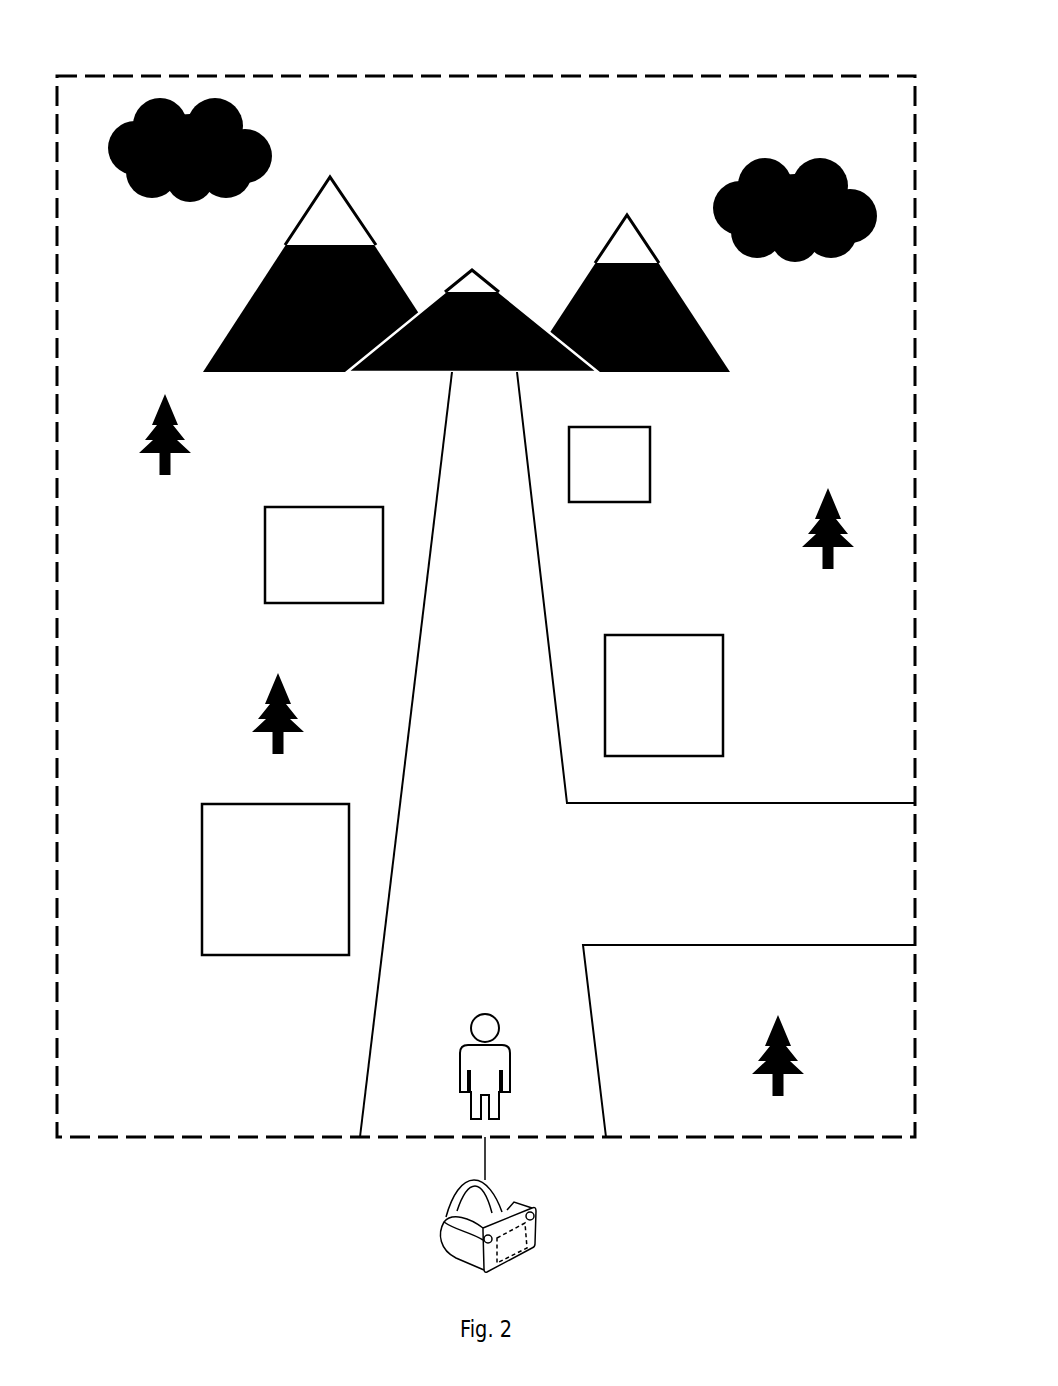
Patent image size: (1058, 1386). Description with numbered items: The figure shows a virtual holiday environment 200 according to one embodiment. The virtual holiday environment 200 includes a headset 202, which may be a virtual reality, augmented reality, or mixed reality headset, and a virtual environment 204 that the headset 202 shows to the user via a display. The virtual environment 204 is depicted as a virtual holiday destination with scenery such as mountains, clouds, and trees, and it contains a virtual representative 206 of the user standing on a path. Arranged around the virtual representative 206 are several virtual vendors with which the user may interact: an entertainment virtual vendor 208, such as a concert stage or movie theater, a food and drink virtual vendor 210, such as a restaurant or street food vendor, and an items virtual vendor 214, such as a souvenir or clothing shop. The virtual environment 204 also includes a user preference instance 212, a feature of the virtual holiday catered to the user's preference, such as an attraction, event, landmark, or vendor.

The virtual holiday environment 200 is at (943, 31).
The headset 202 is at (532, 1208).
The virtual environment 204 is at (838, 1137).
The virtual representative 206 is at (487, 1014).
The entertainment virtual vendor 208 is at (220, 804).
The food and drink virtual vendor 210 is at (703, 635).
The user preference instance 212 is at (283, 507).
The items virtual vendor 214 is at (632, 427).